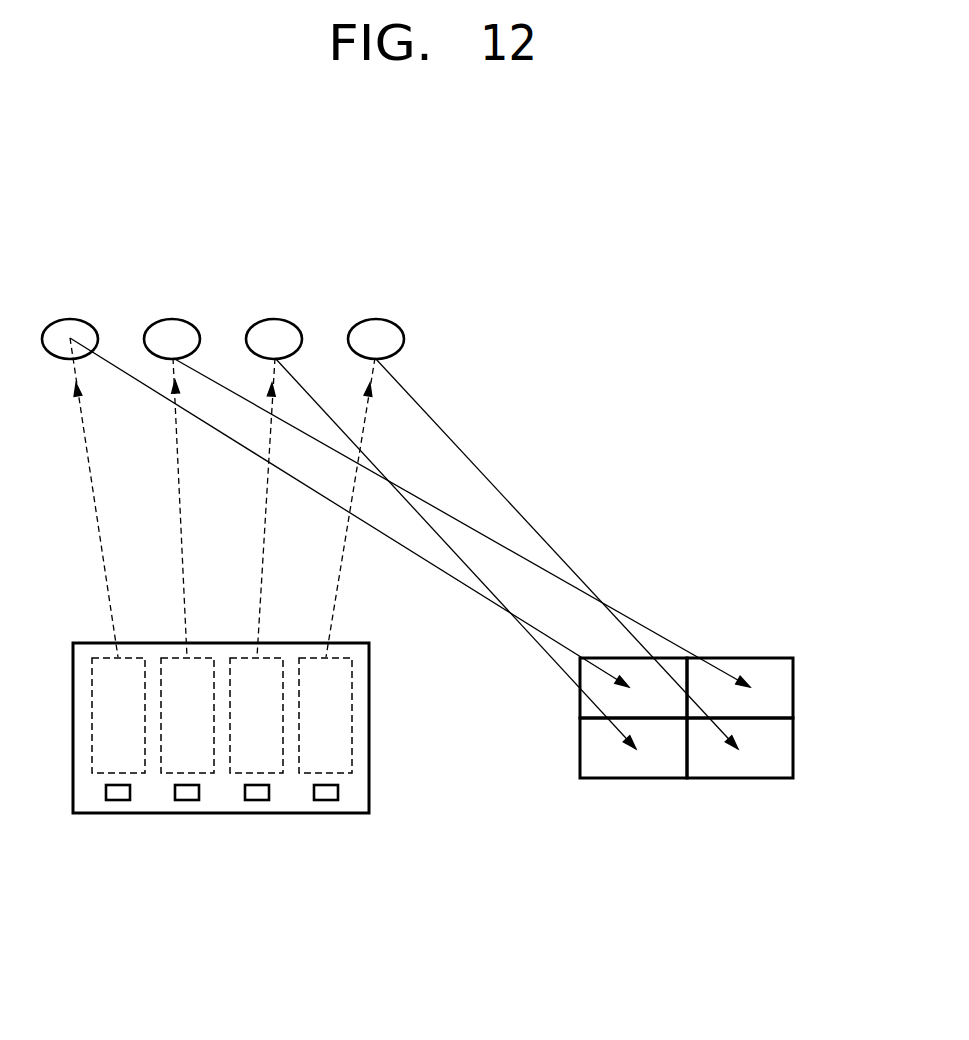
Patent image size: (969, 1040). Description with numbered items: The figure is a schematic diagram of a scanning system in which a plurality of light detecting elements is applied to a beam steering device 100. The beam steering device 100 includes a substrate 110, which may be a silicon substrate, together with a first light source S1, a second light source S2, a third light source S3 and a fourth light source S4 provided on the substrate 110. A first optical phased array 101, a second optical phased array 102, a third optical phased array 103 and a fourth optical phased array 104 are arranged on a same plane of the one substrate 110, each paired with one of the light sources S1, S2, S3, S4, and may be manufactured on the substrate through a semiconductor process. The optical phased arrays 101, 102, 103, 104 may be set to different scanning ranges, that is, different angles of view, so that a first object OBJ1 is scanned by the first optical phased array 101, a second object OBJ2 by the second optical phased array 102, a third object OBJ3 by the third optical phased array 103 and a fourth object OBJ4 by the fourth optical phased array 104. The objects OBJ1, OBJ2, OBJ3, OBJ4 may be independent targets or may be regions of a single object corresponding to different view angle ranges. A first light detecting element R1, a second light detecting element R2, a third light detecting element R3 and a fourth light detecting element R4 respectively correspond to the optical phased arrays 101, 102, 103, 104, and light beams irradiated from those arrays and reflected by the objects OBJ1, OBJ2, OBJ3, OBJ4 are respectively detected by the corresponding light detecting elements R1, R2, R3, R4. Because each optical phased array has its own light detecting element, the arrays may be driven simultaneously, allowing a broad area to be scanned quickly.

The beam steering device 100 is at (271, 726).
The substrate 110 is at (95, 643).
The first optical phased array 101 is at (98, 773).
The second optical phased array 102 is at (168, 773).
The third optical phased array 103 is at (275, 773).
The fourth optical phased array 104 is at (347, 773).
The first light source S1 is at (117, 800).
The second light source S2 is at (187, 800).
The third light source S3 is at (257, 800).
The fourth light source S4 is at (326, 800).
The first light detecting element R1 is at (651, 702).
The second light detecting element R2 is at (770, 665).
The third light detecting element R3 is at (592, 761).
The fourth light detecting element R4 is at (783, 757).
The first object OBJ1 is at (70, 321).
The second object OBJ2 is at (171, 321).
The third object OBJ3 is at (273, 321).
The fourth object OBJ4 is at (375, 321).